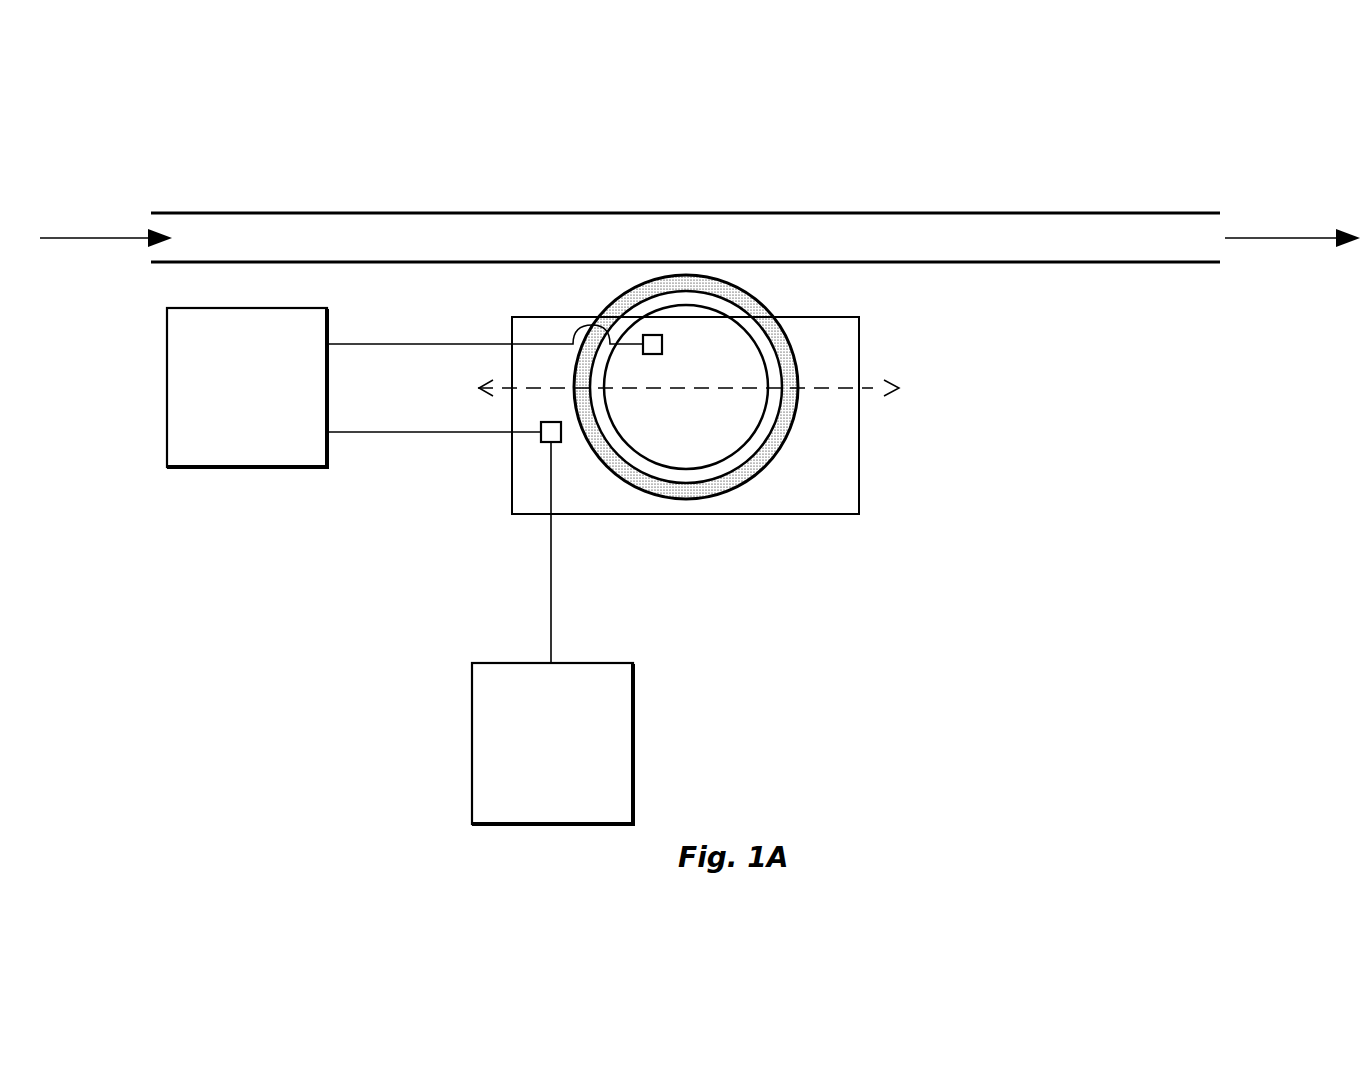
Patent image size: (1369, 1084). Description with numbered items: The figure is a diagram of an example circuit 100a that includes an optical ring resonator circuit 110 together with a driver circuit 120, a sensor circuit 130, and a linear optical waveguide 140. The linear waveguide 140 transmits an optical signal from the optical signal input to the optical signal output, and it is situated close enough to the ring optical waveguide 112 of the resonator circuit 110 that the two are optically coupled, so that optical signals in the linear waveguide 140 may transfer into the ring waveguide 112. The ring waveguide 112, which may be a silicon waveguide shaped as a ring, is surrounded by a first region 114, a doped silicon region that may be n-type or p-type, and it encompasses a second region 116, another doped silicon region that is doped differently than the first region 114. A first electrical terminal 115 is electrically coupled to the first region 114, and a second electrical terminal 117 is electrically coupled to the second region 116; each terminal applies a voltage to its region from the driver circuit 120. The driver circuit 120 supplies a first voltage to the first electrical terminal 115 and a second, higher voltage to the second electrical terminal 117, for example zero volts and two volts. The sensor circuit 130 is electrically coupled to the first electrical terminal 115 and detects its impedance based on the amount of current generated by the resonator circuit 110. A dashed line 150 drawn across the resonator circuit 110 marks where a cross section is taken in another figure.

The circuit 100a is at (1185, 134).
The optical ring resonator circuit 110 is at (859, 333).
The ring optical waveguide 112 is at (796, 428).
The first region 114 is at (838, 501).
The first electrical terminal 115 is at (541, 437).
The second region 116 is at (699, 425).
The second electrical terminal 117 is at (643, 339).
The driver circuit 120 is at (230, 423).
The sensor circuit 130 is at (536, 778).
The linear optical waveguide 140 is at (699, 249).
The line 150 is at (873, 385).